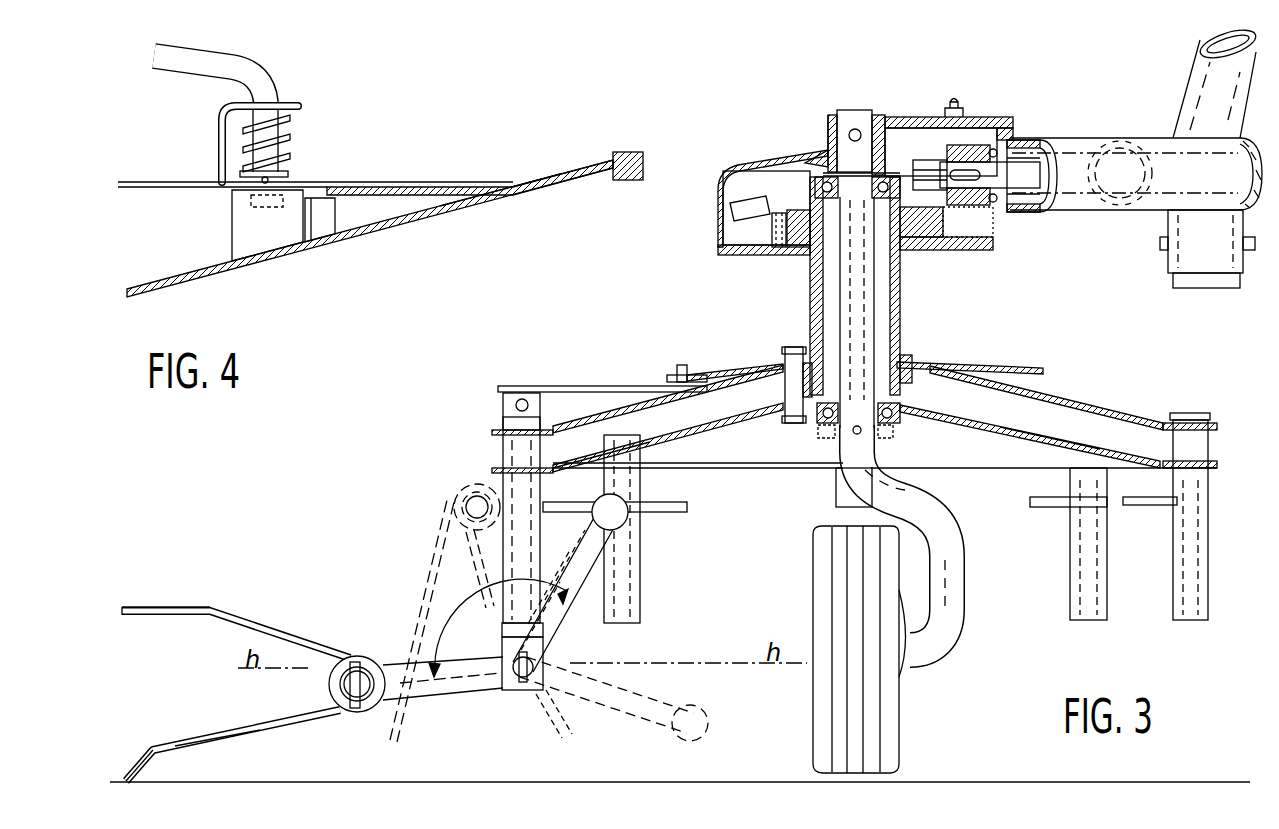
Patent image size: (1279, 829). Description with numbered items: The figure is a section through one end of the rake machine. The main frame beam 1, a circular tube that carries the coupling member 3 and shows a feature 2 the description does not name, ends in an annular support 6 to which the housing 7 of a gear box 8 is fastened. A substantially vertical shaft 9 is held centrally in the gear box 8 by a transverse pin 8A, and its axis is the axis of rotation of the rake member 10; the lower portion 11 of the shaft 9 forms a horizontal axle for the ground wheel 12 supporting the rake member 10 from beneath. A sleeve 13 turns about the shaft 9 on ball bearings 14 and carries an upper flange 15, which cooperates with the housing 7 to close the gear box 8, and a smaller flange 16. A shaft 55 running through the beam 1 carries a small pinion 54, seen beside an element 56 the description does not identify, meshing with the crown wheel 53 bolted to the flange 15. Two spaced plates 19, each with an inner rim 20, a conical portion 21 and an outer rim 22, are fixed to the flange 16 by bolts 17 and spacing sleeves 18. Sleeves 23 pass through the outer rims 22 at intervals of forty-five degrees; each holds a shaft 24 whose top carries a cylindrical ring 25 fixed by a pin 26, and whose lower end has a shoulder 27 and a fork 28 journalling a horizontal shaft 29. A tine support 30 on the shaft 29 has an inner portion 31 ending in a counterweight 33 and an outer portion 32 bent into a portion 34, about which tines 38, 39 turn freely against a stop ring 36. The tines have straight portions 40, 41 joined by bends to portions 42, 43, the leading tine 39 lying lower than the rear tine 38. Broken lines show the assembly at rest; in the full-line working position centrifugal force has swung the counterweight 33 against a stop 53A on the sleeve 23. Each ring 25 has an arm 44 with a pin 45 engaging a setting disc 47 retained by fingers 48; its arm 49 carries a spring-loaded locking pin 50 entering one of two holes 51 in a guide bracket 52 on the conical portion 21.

In FIG. 3, the main frame beam 1 is at (1090, 210).
In FIG. 3, the hole in tube 2 is at (1130, 148).
In FIG. 3, the coupling member 3 is at (1185, 88).
In FIG. 3, the annular support 6 is at (1030, 136).
In FIG. 3, the housing 7 is at (760, 160).
In FIG. 3, the gear box 8 is at (718, 225).
In FIG. 3, the transverse pin 8A is at (853, 129).
In FIG. 3, the shaft 9 is at (862, 110).
In FIG. 3, the rake member 10 is at (293, 592).
In FIG. 3, the lower portion of shaft 11 is at (965, 555).
In FIG. 3, the ground wheel 12 is at (899, 757).
In FIG. 3, the sleeve 13 is at (900, 266).
In FIG. 3, the ball bearings 14 is at (948, 285).
In FIG. 3, the flange 15 is at (800, 258).
In FIG. 4, the flange 16 is at (616, 153).
In FIG. 3, the flange 16 is at (905, 352).
In FIG. 3, the bolts 17 is at (795, 345).
In FIG. 3, the spacing sleeves 18 is at (770, 405).
In FIG. 4, the plates 19 is at (504, 198).
In FIG. 3, the plates 19 is at (1094, 404).
In FIG. 3, the inner rims 20 is at (935, 366).
In FIG. 4, the conical portions 21 is at (390, 252).
In FIG. 3, the conical portions 21 is at (1054, 386).
In FIG. 3, the outer rims 22 is at (1217, 428).
In FIG. 3, the sleeves 23 is at (603, 487).
In FIG. 3, the shaft 24 is at (497, 452).
In FIG. 3, the cylindrical ring 25 is at (503, 395).
In FIG. 3, the transverse pin 26 is at (524, 398).
In FIG. 3, the shoulder 27 is at (552, 633).
In FIG. 3, the fork 28 is at (516, 695).
In FIG. 3, the horizontal shaft 29 is at (540, 680).
In FIG. 3, the tine support 30 is at (455, 700).
In FIG. 3, the support portion 31 is at (605, 560).
In FIG. 3, the support portion 32 is at (480, 655).
In FIG. 3, the counterweight 33 is at (630, 514).
In FIG. 3, the portion 34 is at (455, 503).
In FIG. 3, the stop ring 36 is at (327, 692).
In FIG. 3, the tine 38 is at (212, 603).
In FIG. 3, the tine 39 is at (196, 737).
In FIG. 3, the straight portion 40 is at (282, 623).
In FIG. 3, the straight portion 41 is at (263, 737).
In FIG. 3, the straight portion 42 is at (143, 617).
In FIG. 3, the straight portion 43 is at (143, 767).
In FIG. 3, the arm 44 is at (598, 384).
In FIG. 3, the pin 45 is at (684, 363).
In FIG. 4, the setting disc 47 is at (522, 162).
In FIG. 3, the setting disc 47 is at (740, 363).
In FIG. 3, the fingers 48 is at (776, 350).
In FIG. 4, the arm 49 is at (160, 182).
In FIG. 4, the locking pin 50 is at (273, 92).
In FIG. 4, the holes 51 is at (306, 212).
In FIG. 4, the guide bracket 52 is at (232, 243).
In FIG. 3, the crown wheel 53 is at (720, 207).
In FIG. 3, the stop 53A is at (580, 510).
In FIG. 3, the toothed pinion 54 is at (988, 130).
In FIG. 3, the shaft 55 is at (1043, 186).
In FIG. 3, the bearing 56 is at (998, 238).